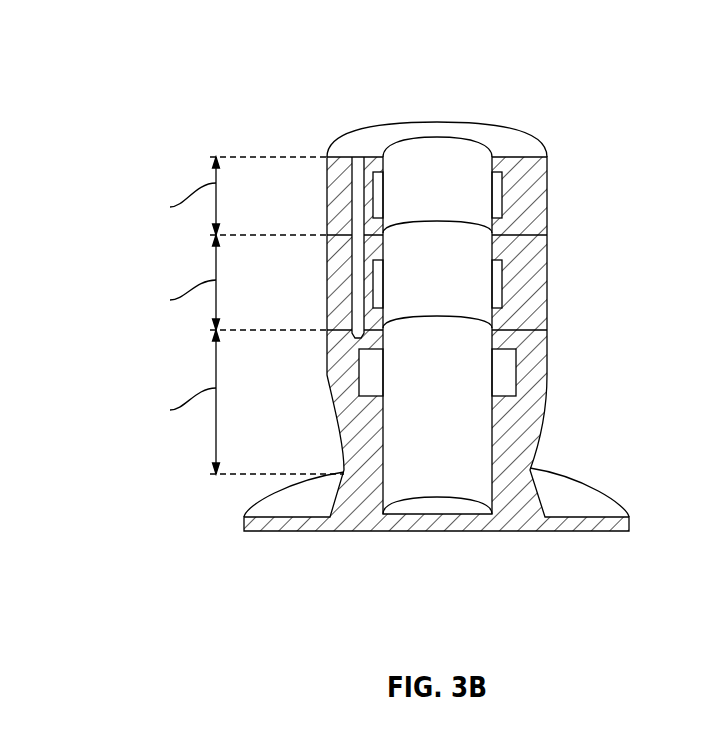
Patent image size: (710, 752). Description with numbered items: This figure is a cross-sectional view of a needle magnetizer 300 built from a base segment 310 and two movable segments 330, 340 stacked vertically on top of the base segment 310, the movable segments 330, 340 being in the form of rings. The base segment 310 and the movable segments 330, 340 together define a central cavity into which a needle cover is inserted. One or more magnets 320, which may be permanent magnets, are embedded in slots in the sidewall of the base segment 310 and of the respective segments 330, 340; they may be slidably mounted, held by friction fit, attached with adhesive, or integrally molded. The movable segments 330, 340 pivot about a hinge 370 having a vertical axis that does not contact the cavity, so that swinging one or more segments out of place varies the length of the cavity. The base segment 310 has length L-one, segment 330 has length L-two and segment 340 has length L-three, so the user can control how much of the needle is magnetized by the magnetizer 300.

The magnetizer 300 is at (593, 94).
The base segment 310 is at (520, 421).
The magnets 320 is at (497, 187).
The movable segment 330 is at (538, 265).
The movable segment 340 is at (540, 172).
The hinge 370 is at (356, 157).